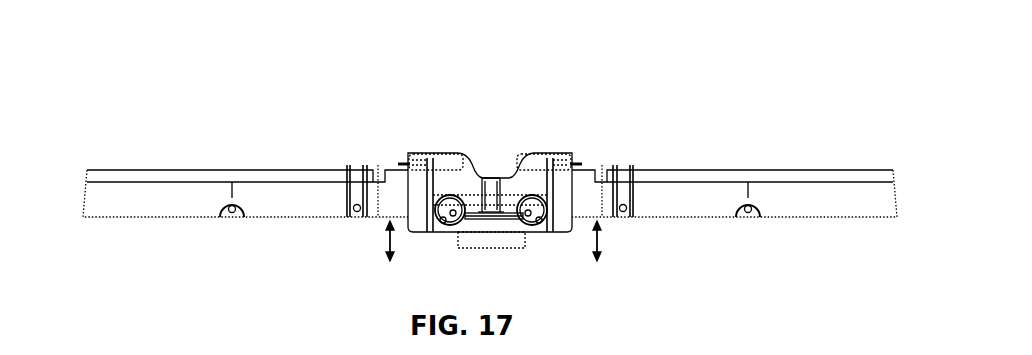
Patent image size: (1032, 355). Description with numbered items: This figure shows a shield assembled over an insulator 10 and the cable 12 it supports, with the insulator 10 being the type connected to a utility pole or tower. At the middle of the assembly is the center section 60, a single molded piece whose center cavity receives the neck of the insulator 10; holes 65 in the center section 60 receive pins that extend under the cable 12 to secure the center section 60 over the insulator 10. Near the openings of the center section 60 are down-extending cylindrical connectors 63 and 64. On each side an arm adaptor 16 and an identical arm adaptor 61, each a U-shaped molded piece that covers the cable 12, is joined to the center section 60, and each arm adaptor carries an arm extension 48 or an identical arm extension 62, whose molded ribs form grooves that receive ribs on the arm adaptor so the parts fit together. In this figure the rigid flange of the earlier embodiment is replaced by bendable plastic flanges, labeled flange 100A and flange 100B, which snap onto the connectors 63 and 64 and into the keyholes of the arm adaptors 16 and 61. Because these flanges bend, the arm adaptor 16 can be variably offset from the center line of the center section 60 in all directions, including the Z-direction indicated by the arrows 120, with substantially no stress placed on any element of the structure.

The insulator 10 is at (508, 242).
The cable 12 is at (542, 228).
The arm adaptor 16 is at (391, 168).
The arm extension 48 is at (266, 169).
The center section 60 is at (529, 111).
The arm adaptor 61 is at (590, 168).
The arm extension 62 is at (680, 169).
The cylindrical connector 63 is at (429, 153).
The cylindrical connector 64 is at (552, 153).
The holes 65 is at (445, 228).
The bendable flange 100A is at (414, 152).
The bendable flange 100B is at (556, 152).
The arrows 120 is at (380, 246).